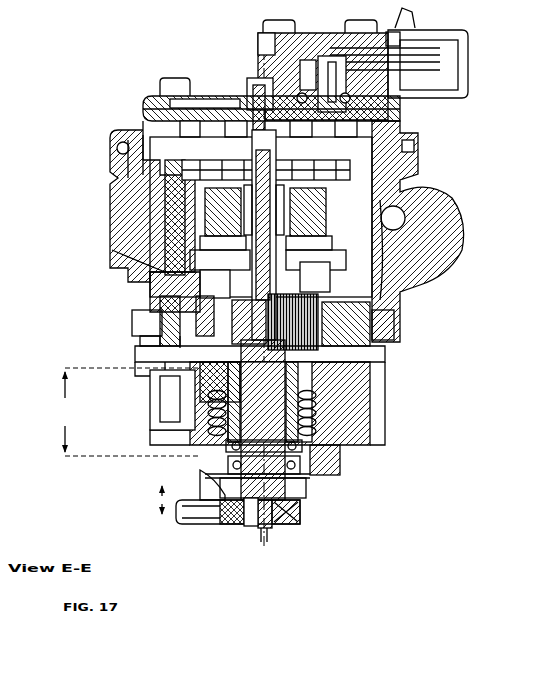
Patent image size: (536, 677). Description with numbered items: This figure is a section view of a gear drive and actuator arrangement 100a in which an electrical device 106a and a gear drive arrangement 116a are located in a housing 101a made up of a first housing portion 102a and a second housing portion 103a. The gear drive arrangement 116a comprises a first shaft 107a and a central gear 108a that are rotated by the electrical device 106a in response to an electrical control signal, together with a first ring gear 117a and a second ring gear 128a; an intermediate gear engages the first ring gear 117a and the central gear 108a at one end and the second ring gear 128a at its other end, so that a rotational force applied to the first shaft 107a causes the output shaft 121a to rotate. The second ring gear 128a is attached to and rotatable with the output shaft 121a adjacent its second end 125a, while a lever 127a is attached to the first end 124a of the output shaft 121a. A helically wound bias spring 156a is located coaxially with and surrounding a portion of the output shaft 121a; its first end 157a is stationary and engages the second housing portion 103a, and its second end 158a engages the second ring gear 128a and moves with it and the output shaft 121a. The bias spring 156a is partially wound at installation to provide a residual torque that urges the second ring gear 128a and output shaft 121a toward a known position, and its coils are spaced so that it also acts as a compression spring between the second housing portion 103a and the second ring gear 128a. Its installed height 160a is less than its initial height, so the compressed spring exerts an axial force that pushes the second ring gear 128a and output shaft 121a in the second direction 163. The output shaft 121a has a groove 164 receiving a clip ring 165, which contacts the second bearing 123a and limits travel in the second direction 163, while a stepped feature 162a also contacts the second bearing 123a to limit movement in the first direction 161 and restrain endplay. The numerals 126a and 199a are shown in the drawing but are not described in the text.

The gear drive and actuator arrangement 100a is at (118, 160).
The housing 101a is at (414, 278).
The first housing portion 102a is at (402, 176).
The second housing portion 103a is at (358, 436).
The electrical device 106a is at (338, 210).
The first shaft 107a is at (412, 252).
The central gear 108a is at (138, 205).
The gear drive arrangement 116a is at (352, 326).
The first ring gear 117a is at (128, 296).
The output shaft 121a is at (286, 440).
The second bearing 123a is at (284, 478).
The first end 124a is at (272, 534).
The second end 125a is at (358, 352).
The retaining washer 126a is at (306, 515).
The lever 127a is at (300, 524).
The second ring gear 128a is at (176, 306).
The bias spring 156a is at (322, 428).
The first end 157a is at (342, 472).
The second end 158a is at (208, 360).
The installed height 160a is at (126, 412).
The first direction 161 is at (226, 514).
The stepped feature 162a is at (196, 434).
The second direction 163 is at (153, 491).
The groove 164 is at (278, 494).
The clip ring 165 is at (203, 485).
The flange plate 199a is at (320, 382).